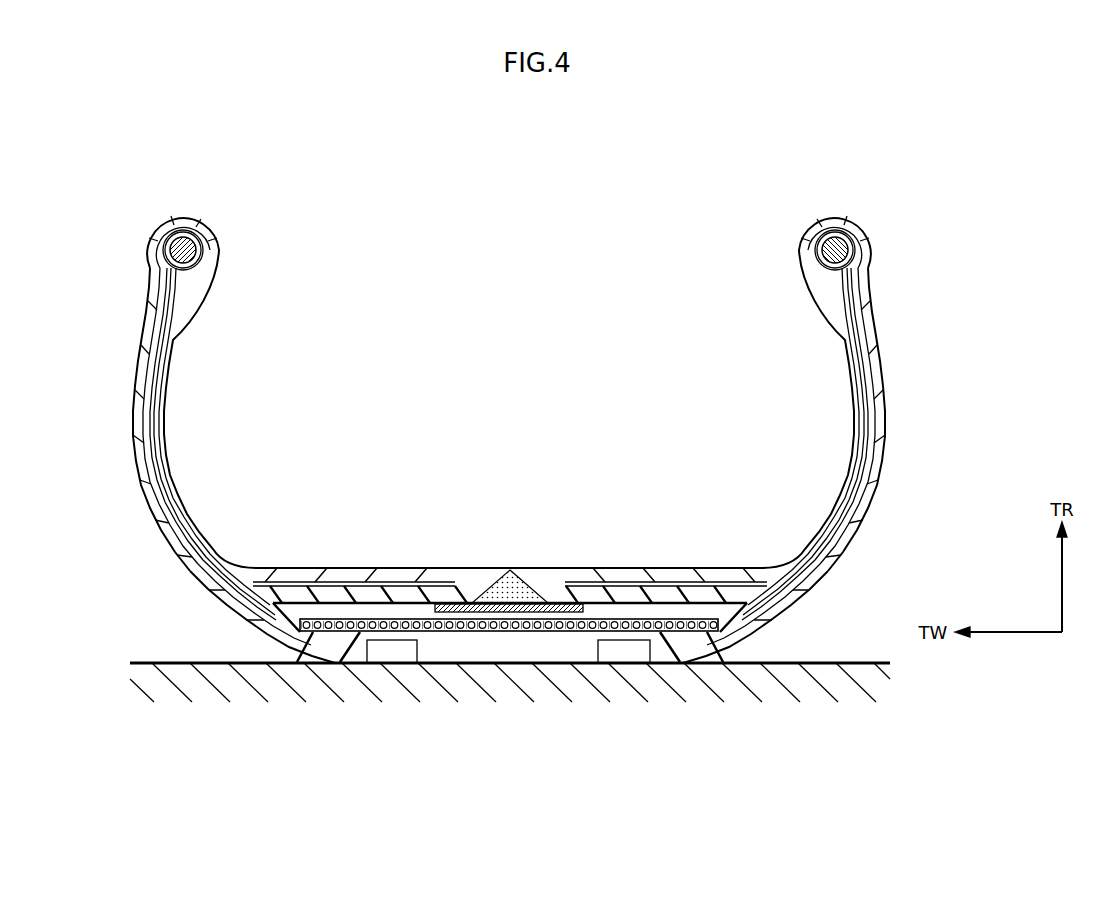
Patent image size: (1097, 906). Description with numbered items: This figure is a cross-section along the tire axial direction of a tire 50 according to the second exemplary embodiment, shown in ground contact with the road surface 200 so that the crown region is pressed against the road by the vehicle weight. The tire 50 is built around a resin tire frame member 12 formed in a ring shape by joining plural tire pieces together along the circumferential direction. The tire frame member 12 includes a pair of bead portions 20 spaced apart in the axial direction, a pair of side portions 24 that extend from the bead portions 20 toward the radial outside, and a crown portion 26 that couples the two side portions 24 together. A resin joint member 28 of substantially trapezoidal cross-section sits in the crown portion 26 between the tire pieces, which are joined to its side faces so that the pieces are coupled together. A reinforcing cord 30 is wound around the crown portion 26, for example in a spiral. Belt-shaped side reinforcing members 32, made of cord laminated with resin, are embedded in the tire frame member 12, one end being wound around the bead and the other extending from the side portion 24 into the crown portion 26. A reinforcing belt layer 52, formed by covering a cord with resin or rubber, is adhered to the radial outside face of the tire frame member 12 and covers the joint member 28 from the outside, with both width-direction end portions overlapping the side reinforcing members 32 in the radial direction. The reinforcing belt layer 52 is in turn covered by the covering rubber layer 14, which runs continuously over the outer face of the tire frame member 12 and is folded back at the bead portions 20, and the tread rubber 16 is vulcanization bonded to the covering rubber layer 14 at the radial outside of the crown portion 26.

The tire 50 is at (884, 168).
The tire frame member 12 is at (345, 563).
The covering rubber layer 14 is at (840, 548).
The tread rubber 16 is at (751, 640).
The bead portions 20 is at (208, 226).
The side portions 24 is at (172, 378).
The crown portion 26 is at (438, 574).
The joint member 28 is at (505, 570).
The reinforcing cord 30 is at (318, 600).
The side reinforcing members 32 is at (180, 320).
The reinforcing belt layer 52 is at (556, 603).
The road surface 200 is at (818, 662).